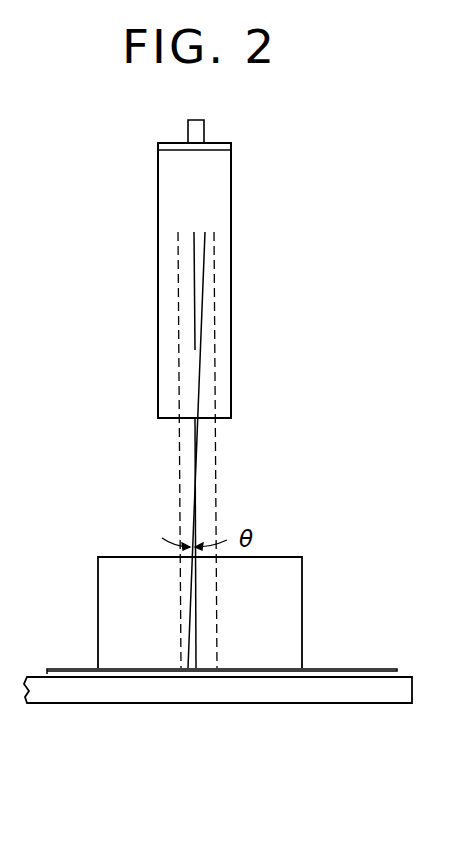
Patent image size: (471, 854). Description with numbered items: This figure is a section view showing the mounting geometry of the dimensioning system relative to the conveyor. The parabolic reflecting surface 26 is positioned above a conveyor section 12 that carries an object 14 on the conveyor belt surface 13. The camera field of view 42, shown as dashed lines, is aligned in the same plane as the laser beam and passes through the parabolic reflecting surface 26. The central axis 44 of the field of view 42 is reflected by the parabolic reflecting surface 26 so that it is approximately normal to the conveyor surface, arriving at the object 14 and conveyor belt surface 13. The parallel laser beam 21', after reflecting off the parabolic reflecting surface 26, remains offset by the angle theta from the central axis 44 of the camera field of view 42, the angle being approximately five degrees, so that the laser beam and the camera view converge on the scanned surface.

The parabolic reflecting surface 26 is at (231, 187).
The central axis 44 is at (195, 275).
The parallel laser beam 21' is at (238, 450).
The field of view 42 is at (181, 477).
The object 14 is at (290, 595).
The conveyor belt surface 13 is at (373, 667).
The conveyor section 12 is at (397, 686).